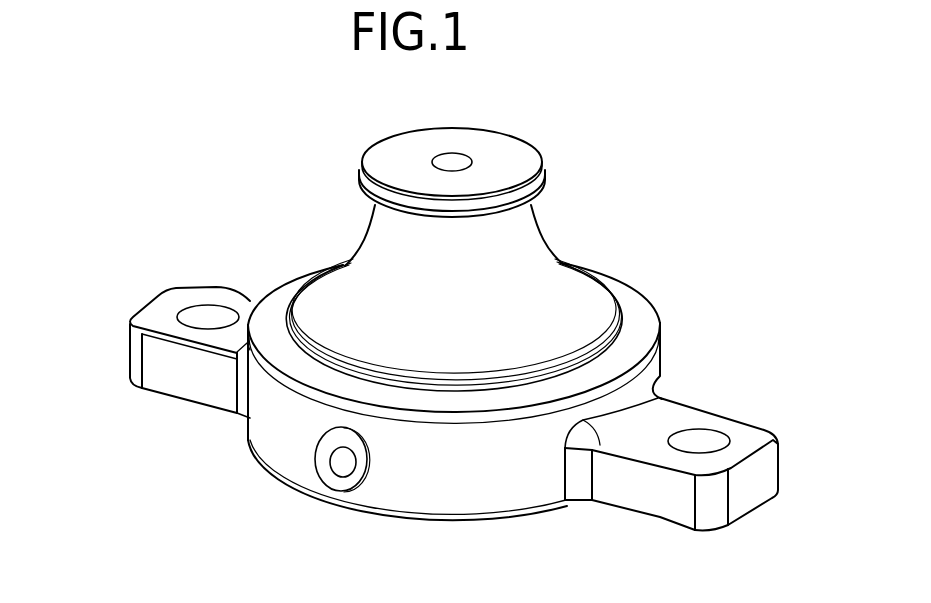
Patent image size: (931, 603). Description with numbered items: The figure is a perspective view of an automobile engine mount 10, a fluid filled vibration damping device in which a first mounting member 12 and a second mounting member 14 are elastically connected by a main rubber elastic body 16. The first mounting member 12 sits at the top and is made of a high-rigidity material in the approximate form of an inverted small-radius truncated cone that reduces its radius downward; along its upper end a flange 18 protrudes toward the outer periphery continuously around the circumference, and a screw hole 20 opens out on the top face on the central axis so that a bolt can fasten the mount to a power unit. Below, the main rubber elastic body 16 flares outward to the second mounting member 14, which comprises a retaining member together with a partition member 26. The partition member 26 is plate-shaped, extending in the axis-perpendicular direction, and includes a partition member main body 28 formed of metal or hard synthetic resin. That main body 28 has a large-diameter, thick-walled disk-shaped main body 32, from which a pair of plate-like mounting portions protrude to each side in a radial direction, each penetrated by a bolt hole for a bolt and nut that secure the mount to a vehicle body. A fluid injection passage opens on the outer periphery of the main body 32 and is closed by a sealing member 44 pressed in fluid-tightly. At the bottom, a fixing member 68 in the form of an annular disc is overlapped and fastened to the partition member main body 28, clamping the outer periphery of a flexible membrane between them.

The engine mount 10 is at (598, 205).
The first mounting member 12 is at (497, 124).
The second mounting member 14 is at (115, 387).
The main rubber elastic body 16 is at (380, 245).
The flange 18 is at (398, 150).
The screw hole 20 is at (446, 168).
The partition member 26 is at (672, 396).
The partition member main body 28 is at (685, 482).
The main body 32 is at (273, 445).
The sealing member 44 is at (340, 462).
The fixing member 68 is at (460, 518).